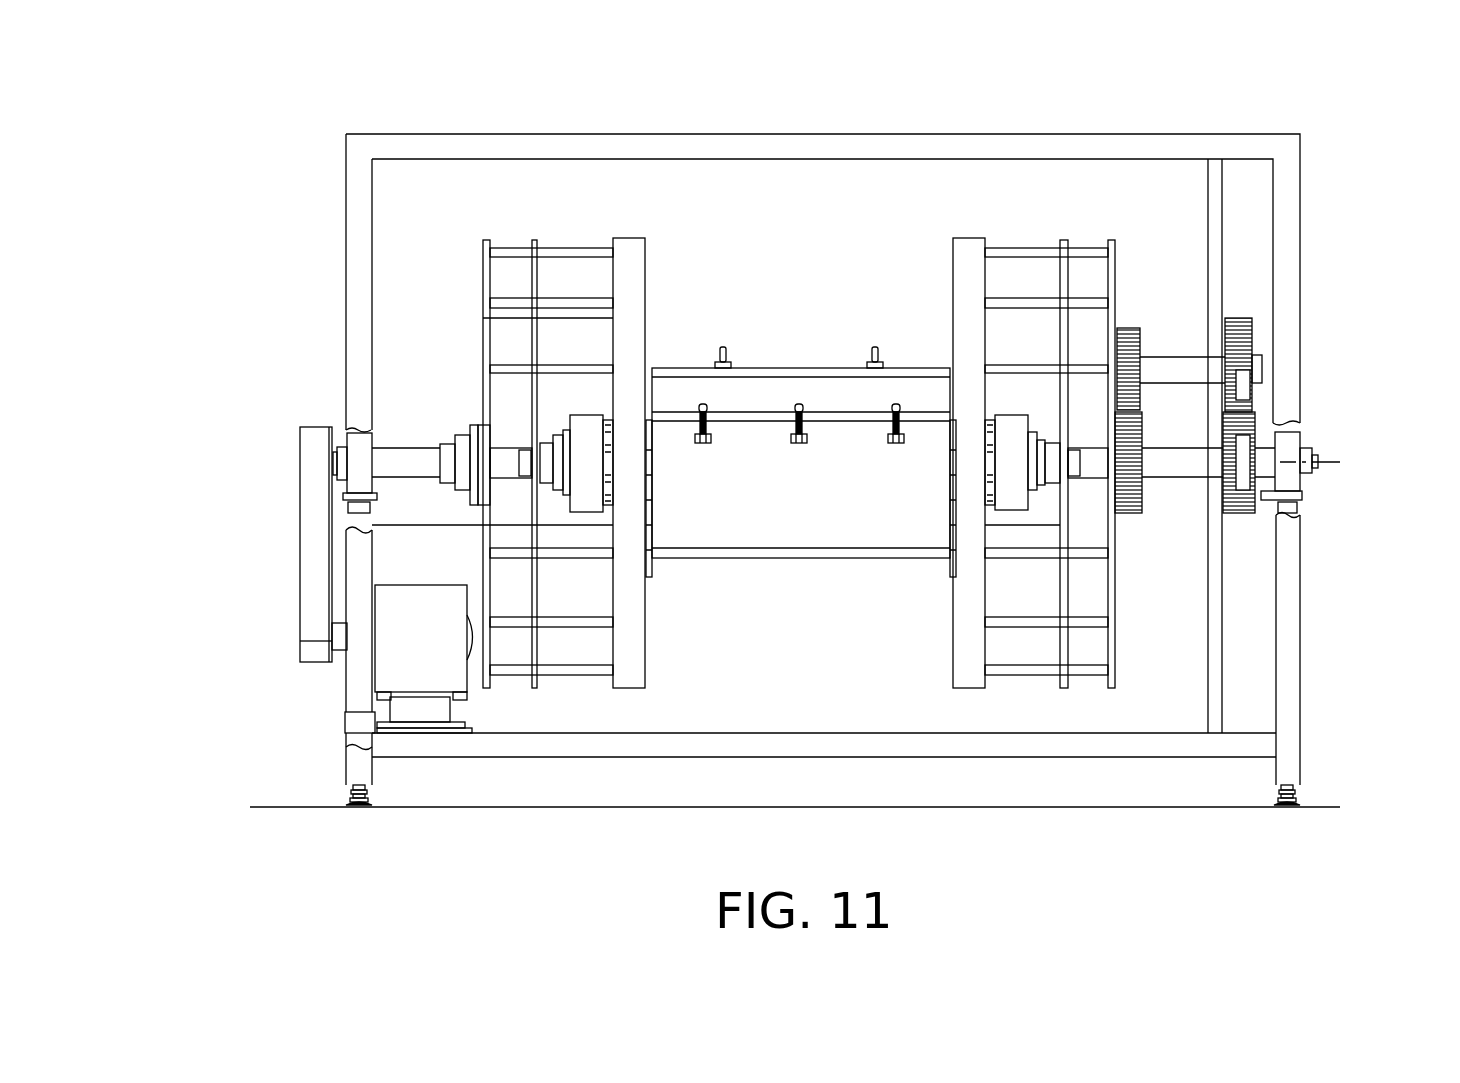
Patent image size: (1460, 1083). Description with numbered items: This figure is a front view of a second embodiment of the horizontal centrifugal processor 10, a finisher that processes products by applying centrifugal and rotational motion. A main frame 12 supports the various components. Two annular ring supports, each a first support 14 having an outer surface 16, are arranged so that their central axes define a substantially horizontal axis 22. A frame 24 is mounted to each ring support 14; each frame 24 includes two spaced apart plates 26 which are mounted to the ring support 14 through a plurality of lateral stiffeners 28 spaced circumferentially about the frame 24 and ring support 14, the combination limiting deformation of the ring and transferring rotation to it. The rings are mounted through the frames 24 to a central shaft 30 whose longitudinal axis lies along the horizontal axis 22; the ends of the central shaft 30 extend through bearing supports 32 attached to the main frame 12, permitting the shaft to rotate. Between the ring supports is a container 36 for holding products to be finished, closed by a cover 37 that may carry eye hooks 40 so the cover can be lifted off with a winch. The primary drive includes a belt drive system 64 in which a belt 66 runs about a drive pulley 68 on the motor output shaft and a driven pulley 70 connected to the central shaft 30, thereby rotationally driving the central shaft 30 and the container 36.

The horizontal centrifugal processor 10 is at (1380, 170).
The main frame 12 is at (1300, 370).
The first support 14 is at (624, 222).
The outer surface 16 is at (634, 330).
The horizontal axis 22 is at (300, 465).
The frame 24 is at (512, 228).
The plates 26 is at (530, 317).
The lateral stiffeners 28 is at (1023, 258).
The central shaft 30 is at (1261, 444).
The bearing supports 32 is at (362, 442).
The container 36 is at (826, 405).
The cover 37 is at (780, 368).
The eye hooks 40 is at (880, 348).
The belt drive system 64 is at (285, 569).
The belt 66 is at (315, 598).
The drive pulley 68 is at (300, 642).
The driven pulley 70 is at (300, 428).